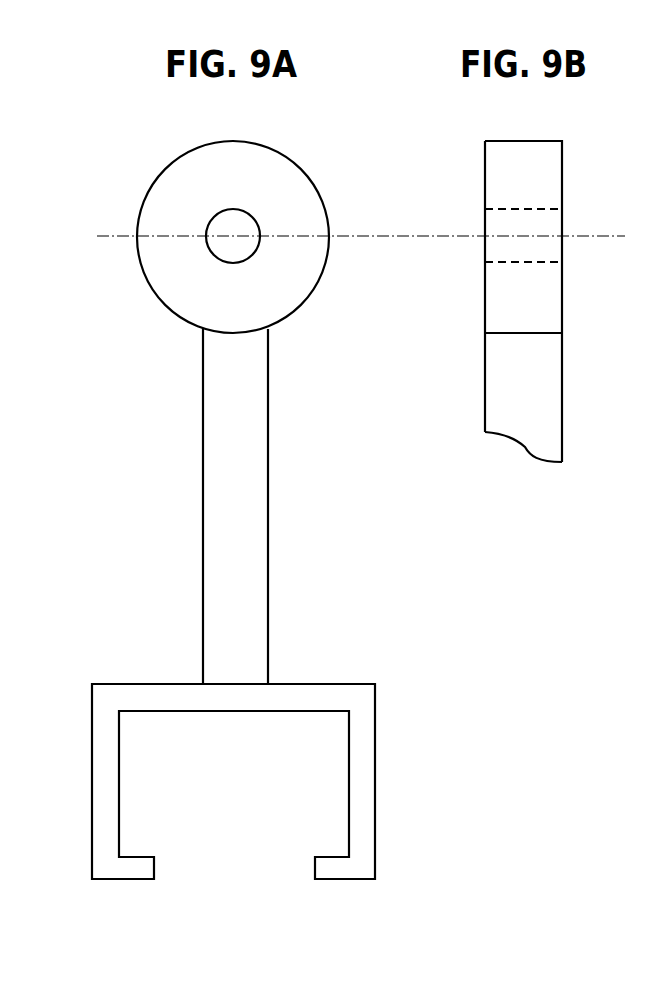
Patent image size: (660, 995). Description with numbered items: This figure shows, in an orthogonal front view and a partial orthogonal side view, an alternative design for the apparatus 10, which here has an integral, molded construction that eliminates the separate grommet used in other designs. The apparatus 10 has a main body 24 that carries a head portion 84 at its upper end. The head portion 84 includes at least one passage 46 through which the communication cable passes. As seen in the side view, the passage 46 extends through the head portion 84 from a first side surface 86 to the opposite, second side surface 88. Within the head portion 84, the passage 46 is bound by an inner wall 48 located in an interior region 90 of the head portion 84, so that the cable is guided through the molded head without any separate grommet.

In FIG. 9A, the apparatus 10 is at (145, 349).
In FIG. 9A, the main body 24 is at (203, 431).
In FIG. 9A, the passage 46 is at (211, 246).
In FIG. 9B, the passage 46 is at (483, 246).
In FIG. 9B, the inner wall 48 is at (549, 262).
In FIG. 9A, the head portion 84 is at (137, 212).
In FIG. 9B, the head portion 84 is at (485, 170).
In FIG. 9A, the first side surface 86 is at (285, 297).
In FIG. 9B, the first side surface 86 is at (485, 318).
In FIG. 9B, the second side surface 88 is at (562, 166).
In FIG. 9B, the interior region 90 is at (545, 197).